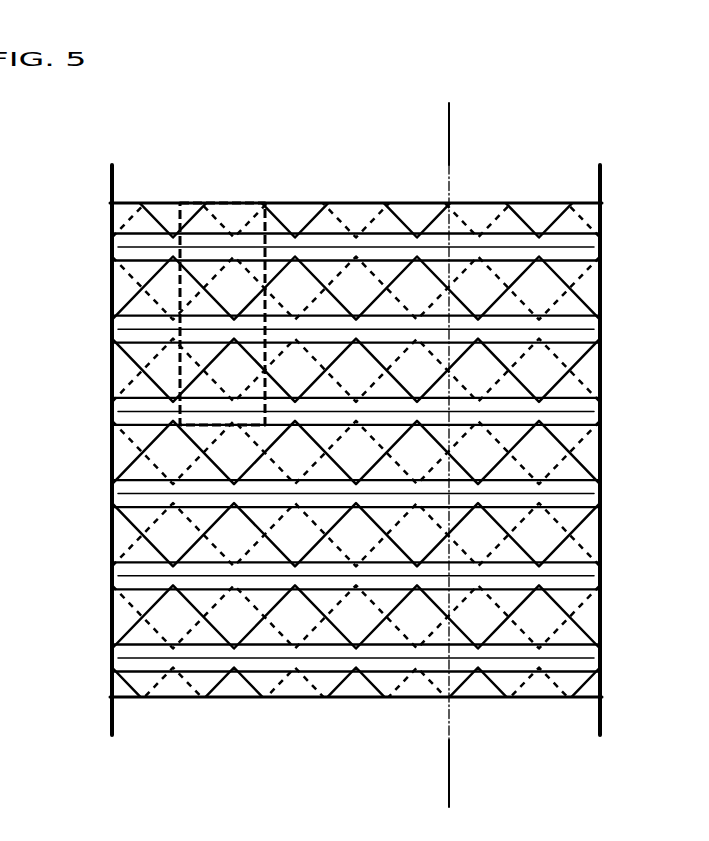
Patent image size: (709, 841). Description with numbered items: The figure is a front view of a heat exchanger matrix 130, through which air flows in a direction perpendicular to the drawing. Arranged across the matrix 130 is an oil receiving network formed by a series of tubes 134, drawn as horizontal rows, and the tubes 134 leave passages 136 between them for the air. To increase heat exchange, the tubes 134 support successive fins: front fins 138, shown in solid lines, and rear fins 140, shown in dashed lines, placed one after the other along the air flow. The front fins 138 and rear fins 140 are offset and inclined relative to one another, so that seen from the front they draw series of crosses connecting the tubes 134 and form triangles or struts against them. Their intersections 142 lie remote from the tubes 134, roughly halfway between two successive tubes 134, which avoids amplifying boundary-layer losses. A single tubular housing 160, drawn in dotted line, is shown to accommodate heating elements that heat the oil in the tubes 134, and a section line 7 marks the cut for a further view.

The matrix 130 is at (266, 124).
The tubes 134 is at (582, 250).
The passages 136 is at (538, 230).
The front fins 138 is at (293, 233).
The rear fins 140 is at (367, 226).
The intersections 142 is at (263, 288).
The housing 160 is at (266, 228).
The section line 7- 7 is at (449, 147).